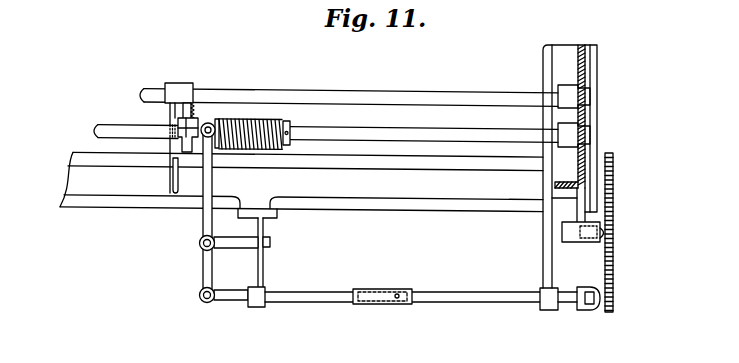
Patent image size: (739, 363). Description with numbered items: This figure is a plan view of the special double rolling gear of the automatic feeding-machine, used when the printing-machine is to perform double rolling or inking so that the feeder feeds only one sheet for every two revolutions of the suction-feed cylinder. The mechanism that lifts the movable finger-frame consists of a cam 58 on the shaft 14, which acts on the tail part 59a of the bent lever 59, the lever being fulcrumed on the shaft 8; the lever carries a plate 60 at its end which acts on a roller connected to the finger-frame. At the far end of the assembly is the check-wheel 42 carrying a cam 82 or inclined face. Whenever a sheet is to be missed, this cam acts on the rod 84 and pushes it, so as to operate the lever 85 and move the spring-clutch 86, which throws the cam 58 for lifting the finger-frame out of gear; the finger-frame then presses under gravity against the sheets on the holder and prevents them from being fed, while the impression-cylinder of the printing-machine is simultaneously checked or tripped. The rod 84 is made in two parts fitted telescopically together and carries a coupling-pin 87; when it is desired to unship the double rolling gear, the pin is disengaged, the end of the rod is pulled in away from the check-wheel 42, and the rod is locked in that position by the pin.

The shaft 8 is at (412, 98).
The shaft 14 is at (447, 137).
The check-wheel 42 is at (614, 191).
The cam 58 is at (190, 137).
The bent lever 59 is at (170, 118).
The tail part 59a is at (196, 112).
The plate 60 is at (175, 195).
The cam 82 is at (613, 235).
The rod 84 is at (508, 300).
The lever 85 is at (207, 262).
The spring-clutch 86 is at (222, 120).
The coupling-pin 87 is at (398, 302).